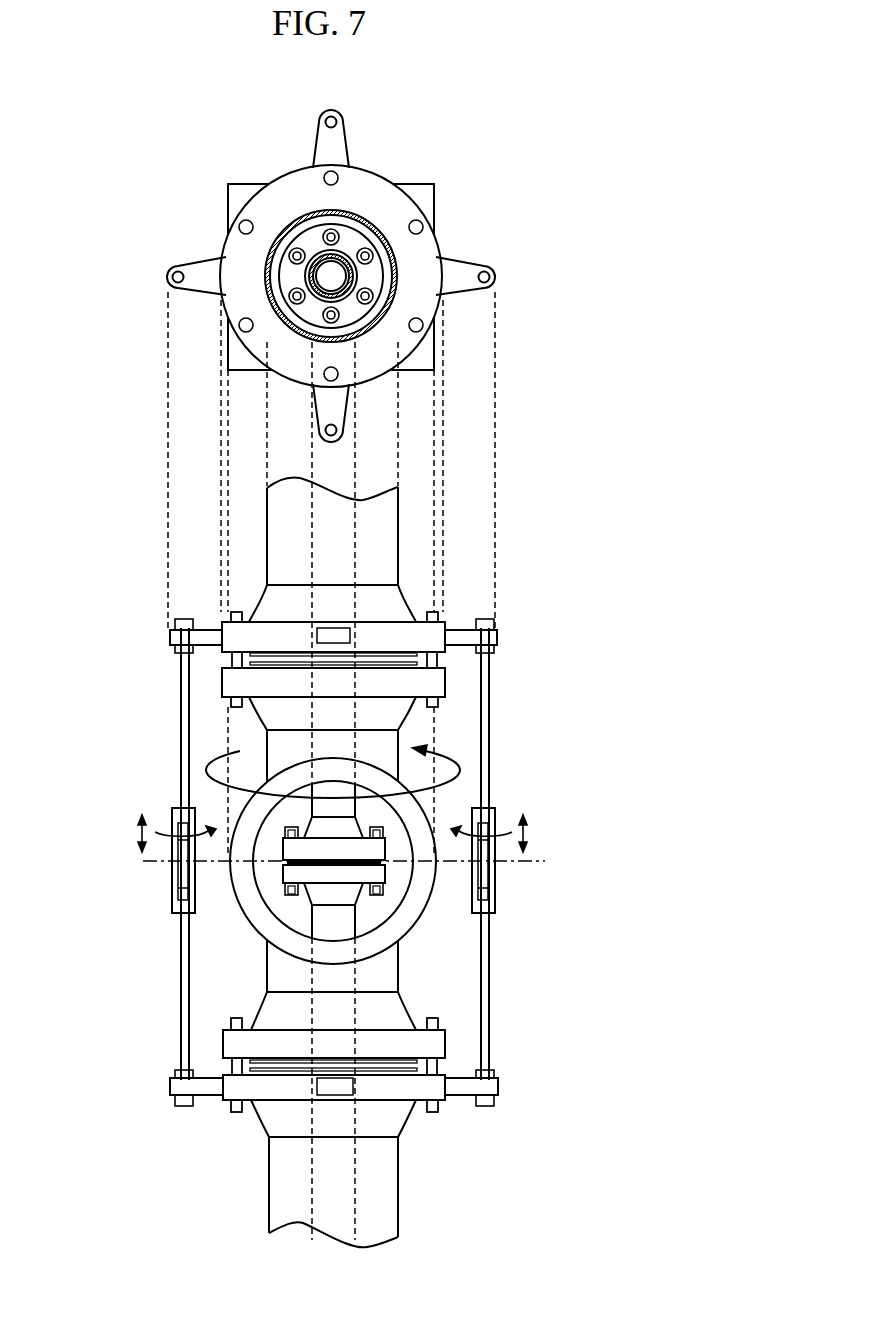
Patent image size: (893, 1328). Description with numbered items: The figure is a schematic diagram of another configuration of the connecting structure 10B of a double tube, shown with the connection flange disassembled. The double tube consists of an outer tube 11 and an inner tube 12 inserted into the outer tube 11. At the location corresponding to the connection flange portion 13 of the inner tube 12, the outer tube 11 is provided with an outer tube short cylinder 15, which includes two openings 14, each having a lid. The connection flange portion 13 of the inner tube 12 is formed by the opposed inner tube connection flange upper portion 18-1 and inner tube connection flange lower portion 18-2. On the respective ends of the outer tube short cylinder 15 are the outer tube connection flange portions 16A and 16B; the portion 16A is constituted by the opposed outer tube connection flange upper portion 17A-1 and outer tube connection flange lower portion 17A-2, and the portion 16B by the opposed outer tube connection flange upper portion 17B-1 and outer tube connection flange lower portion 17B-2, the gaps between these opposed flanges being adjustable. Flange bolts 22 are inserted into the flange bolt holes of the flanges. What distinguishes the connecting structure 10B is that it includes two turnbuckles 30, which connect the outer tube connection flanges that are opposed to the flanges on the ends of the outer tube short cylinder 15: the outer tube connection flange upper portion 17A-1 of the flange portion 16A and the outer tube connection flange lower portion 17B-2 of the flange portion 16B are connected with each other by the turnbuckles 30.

The connecting structure 10B is at (146, 144).
The outer tube 11 is at (393, 251).
The inner tube 12 is at (318, 254).
The connection flange portion 13 is at (96, 933).
The opening 14 is at (433, 905).
The outer tube short cylinder 15 is at (241, 749).
The outer tube connection flange portion 16A is at (643, 625).
The outer tube connection flange portion 16B is at (605, 1032).
The outer tube connection flange upper portion 17A-1 is at (445, 650).
The outer tube connection flange lower portion 17A-2 is at (445, 675).
The outer tube connection flange upper portion 17B-1 is at (445, 1047).
The outer tube connection flange lower portion 17B-2 is at (445, 1072).
The inner tube connection flange upper portion 18-1 is at (277, 847).
The inner tube connection flange lower portion 18-2 is at (275, 875).
The flange bolt 22 is at (234, 612).
The turnbuckle 30 is at (172, 879).